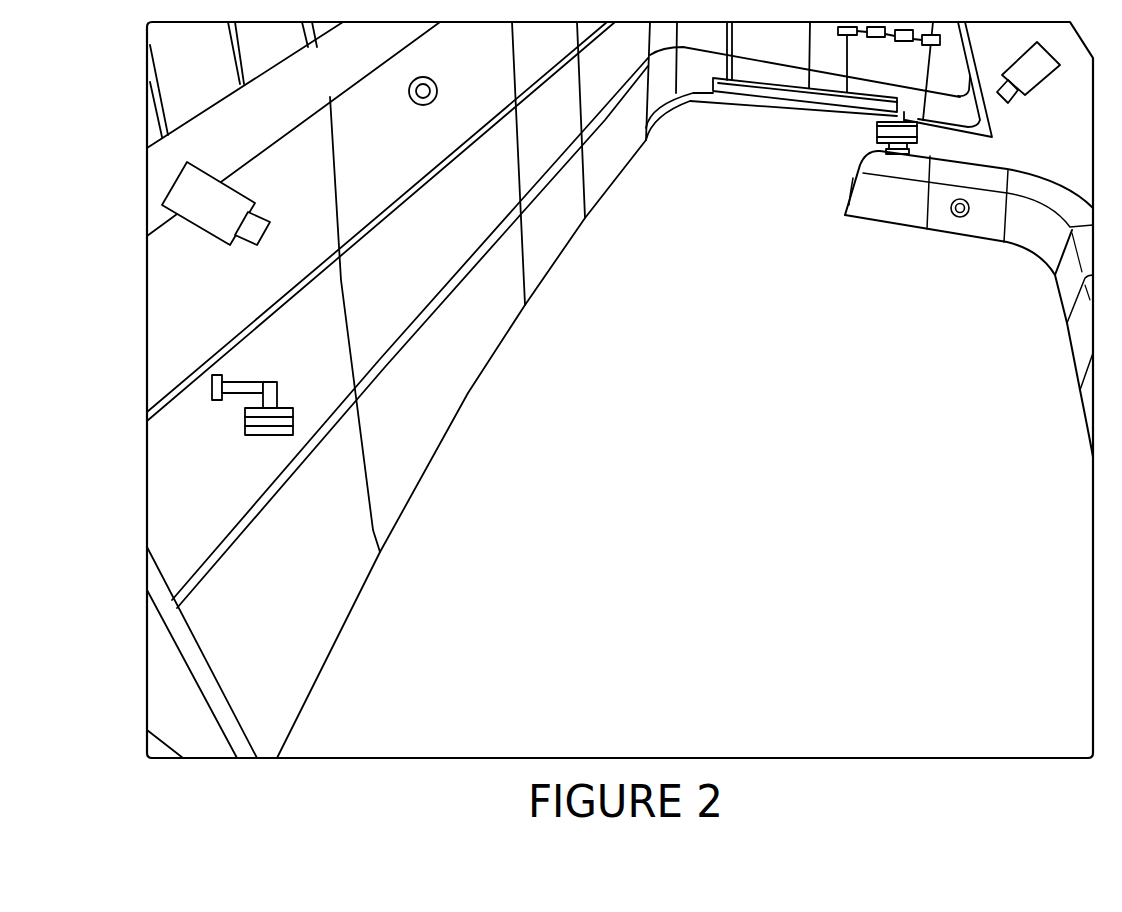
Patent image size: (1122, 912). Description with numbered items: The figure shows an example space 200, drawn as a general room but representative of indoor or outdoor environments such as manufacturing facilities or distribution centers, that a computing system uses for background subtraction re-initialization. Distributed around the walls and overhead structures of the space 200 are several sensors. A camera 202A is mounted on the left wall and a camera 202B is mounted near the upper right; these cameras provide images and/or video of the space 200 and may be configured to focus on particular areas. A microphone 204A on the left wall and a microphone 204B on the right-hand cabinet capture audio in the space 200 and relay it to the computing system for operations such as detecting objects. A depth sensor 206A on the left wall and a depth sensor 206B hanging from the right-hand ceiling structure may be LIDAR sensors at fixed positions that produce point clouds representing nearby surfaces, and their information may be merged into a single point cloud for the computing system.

The space 200 is at (128, 103).
The camera 202A is at (202, 237).
The camera 202B is at (1043, 92).
The microphone 204A is at (410, 110).
The microphone 204B is at (950, 214).
The depth sensor 206A is at (247, 440).
The depth sensor 206B is at (870, 138).